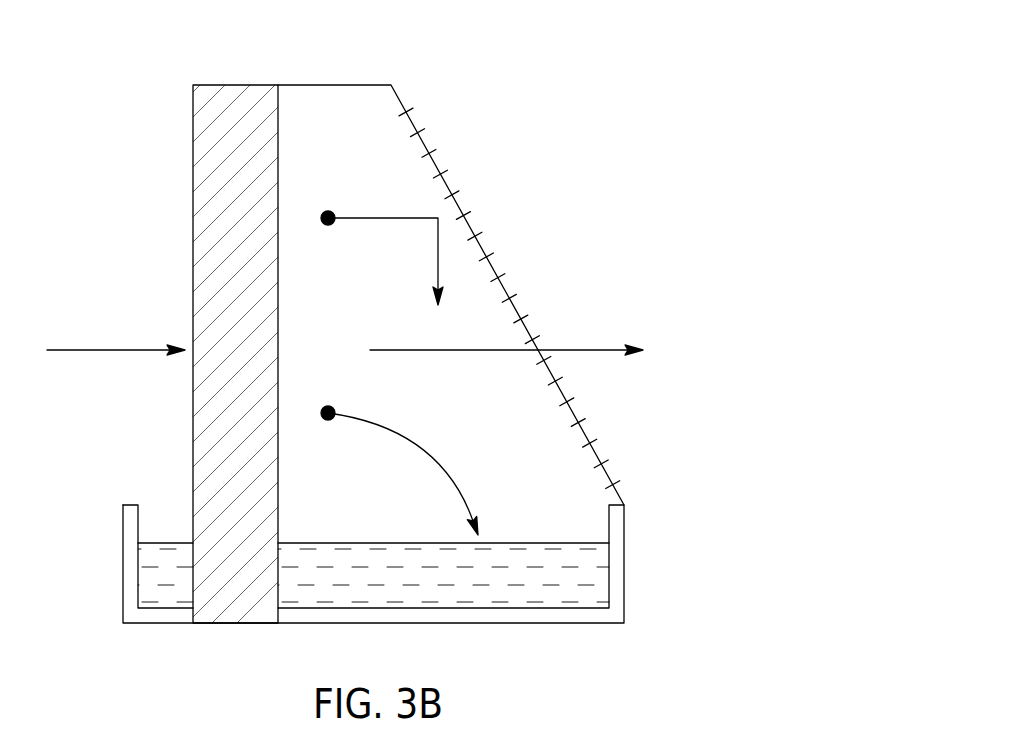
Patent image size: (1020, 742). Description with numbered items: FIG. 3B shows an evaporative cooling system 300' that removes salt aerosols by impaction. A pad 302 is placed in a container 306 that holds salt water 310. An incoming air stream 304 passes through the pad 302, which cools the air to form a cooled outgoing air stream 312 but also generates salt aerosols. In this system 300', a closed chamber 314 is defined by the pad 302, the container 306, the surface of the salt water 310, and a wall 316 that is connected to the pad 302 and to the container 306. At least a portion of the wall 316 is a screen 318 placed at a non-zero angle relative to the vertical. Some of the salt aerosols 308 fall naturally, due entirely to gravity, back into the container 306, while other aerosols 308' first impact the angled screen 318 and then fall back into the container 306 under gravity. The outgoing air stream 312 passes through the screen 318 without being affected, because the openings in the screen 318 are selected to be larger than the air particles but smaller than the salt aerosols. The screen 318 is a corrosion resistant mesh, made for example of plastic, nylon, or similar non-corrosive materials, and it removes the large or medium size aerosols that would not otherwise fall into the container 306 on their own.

The system 300' is at (768, 62).
The pad 302 is at (237, 85).
The incoming air stream 304 is at (117, 348).
The container 306 is at (123, 568).
The salt aerosols 308 is at (488, 470).
The aerosols 308' is at (382, 168).
The salt water 310 is at (467, 603).
The cooled outgoing air stream 312 is at (571, 348).
The closed chamber 314 is at (377, 511).
The wall 316 is at (500, 262).
The screen 318 is at (419, 123).